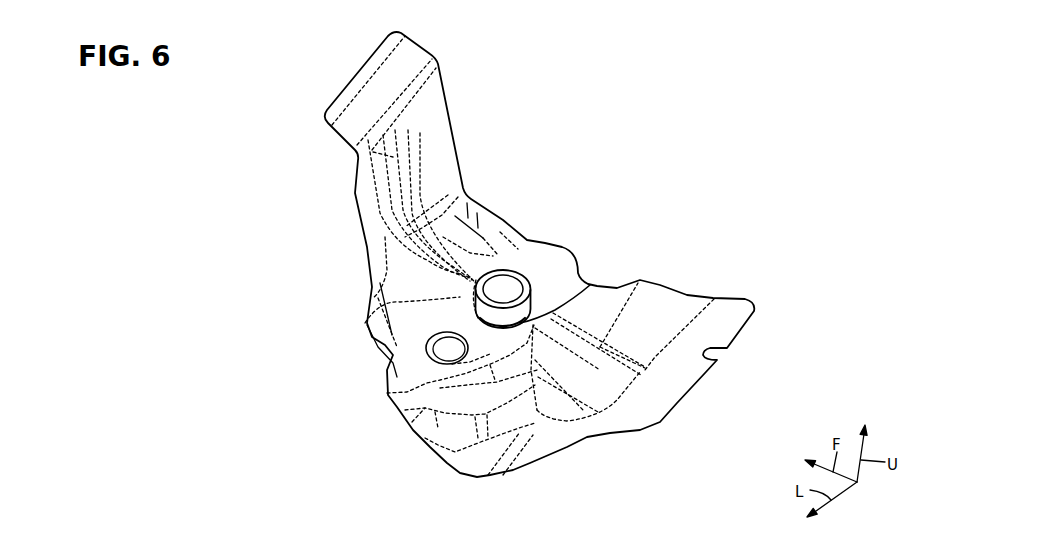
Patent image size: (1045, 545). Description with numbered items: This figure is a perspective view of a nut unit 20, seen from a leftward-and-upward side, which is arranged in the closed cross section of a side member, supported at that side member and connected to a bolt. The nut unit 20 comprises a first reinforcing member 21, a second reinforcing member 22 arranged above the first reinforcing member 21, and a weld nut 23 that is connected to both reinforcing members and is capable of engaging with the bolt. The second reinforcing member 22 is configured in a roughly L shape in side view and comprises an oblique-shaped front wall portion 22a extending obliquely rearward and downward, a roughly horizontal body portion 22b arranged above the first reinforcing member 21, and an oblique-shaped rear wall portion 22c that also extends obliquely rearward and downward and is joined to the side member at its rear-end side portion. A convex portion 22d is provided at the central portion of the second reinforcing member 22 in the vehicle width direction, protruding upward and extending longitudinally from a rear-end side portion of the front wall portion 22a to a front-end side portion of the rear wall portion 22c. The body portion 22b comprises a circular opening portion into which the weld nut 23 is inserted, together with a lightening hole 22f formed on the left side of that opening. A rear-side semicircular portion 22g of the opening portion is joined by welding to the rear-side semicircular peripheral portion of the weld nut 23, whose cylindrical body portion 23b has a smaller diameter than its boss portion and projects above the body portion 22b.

The nut unit 20 is at (508, 132).
The first reinforcing member 21 is at (443, 355).
The second reinforcing member 22 is at (495, 180).
The front wall portion 22a is at (444, 108).
The body portion 22b is at (498, 265).
The rear wall portion 22c is at (713, 305).
The convex portion 22d is at (403, 235).
The lightening hole 22f is at (428, 349).
The rear-side semicircular portion 22g is at (589, 284).
The weld nut 23 is at (515, 268).
The cylindrical body portion 23b is at (537, 280).